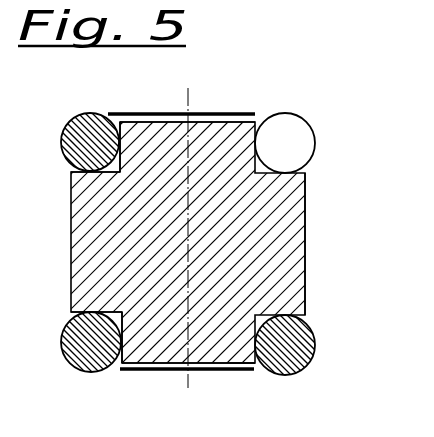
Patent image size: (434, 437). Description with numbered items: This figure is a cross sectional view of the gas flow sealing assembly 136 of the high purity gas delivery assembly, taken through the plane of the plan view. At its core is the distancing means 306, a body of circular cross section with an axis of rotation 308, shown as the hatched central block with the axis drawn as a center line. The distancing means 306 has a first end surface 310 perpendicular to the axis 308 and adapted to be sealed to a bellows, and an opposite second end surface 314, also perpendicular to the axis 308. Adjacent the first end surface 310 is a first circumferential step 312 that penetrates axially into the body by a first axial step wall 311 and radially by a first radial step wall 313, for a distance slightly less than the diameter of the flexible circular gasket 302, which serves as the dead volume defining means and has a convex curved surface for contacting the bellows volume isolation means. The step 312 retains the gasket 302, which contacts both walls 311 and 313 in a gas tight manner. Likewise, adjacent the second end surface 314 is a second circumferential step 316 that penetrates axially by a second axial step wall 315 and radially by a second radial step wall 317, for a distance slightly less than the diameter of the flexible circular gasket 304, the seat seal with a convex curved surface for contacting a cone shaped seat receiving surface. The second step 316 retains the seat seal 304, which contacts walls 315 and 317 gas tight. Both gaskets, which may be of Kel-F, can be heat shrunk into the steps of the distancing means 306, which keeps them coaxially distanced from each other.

The gas flow sealing assembly 136 is at (307, 252).
The flexible circular gasket 302 is at (308, 127).
The flexible circular gasket 304 is at (308, 345).
The distancing means 306 is at (306, 282).
The axis of rotation 308 is at (186, 383).
The first end surface 310 is at (224, 112).
The first axial step wall 311 is at (118, 132).
The first circumferential step 312 is at (121, 143).
The first radial step wall 313 is at (100, 186).
The second end surface 314 is at (242, 374).
The second axial step wall 315 is at (134, 358).
The second circumferential step 316 is at (124, 320).
The second radial step wall 317 is at (72, 315).